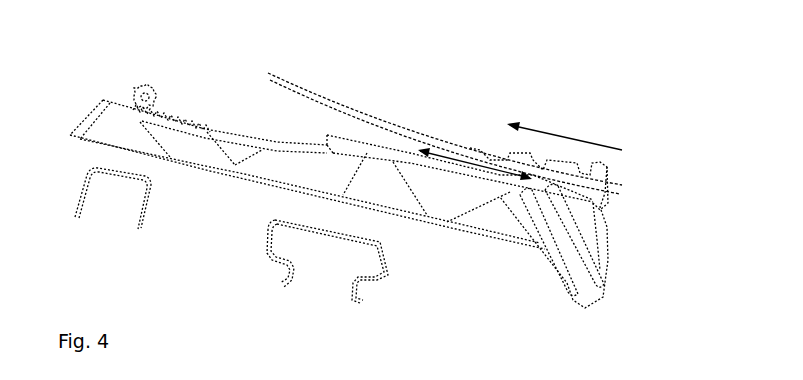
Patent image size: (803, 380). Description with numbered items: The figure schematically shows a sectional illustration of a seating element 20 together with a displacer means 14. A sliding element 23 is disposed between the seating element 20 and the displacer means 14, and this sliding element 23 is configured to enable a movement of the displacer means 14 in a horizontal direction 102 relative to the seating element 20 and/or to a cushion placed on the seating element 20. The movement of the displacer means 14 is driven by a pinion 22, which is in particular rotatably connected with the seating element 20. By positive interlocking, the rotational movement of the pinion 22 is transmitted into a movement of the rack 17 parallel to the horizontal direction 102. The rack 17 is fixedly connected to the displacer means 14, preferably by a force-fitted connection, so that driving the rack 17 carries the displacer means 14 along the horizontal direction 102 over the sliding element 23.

The pinion 22 is at (128, 98).
The rack 17 is at (194, 114).
The seating element 20 is at (417, 125).
The sliding element 23 is at (467, 160).
The horizontal direction 102 is at (566, 137).
The displacer means 14 is at (612, 238).